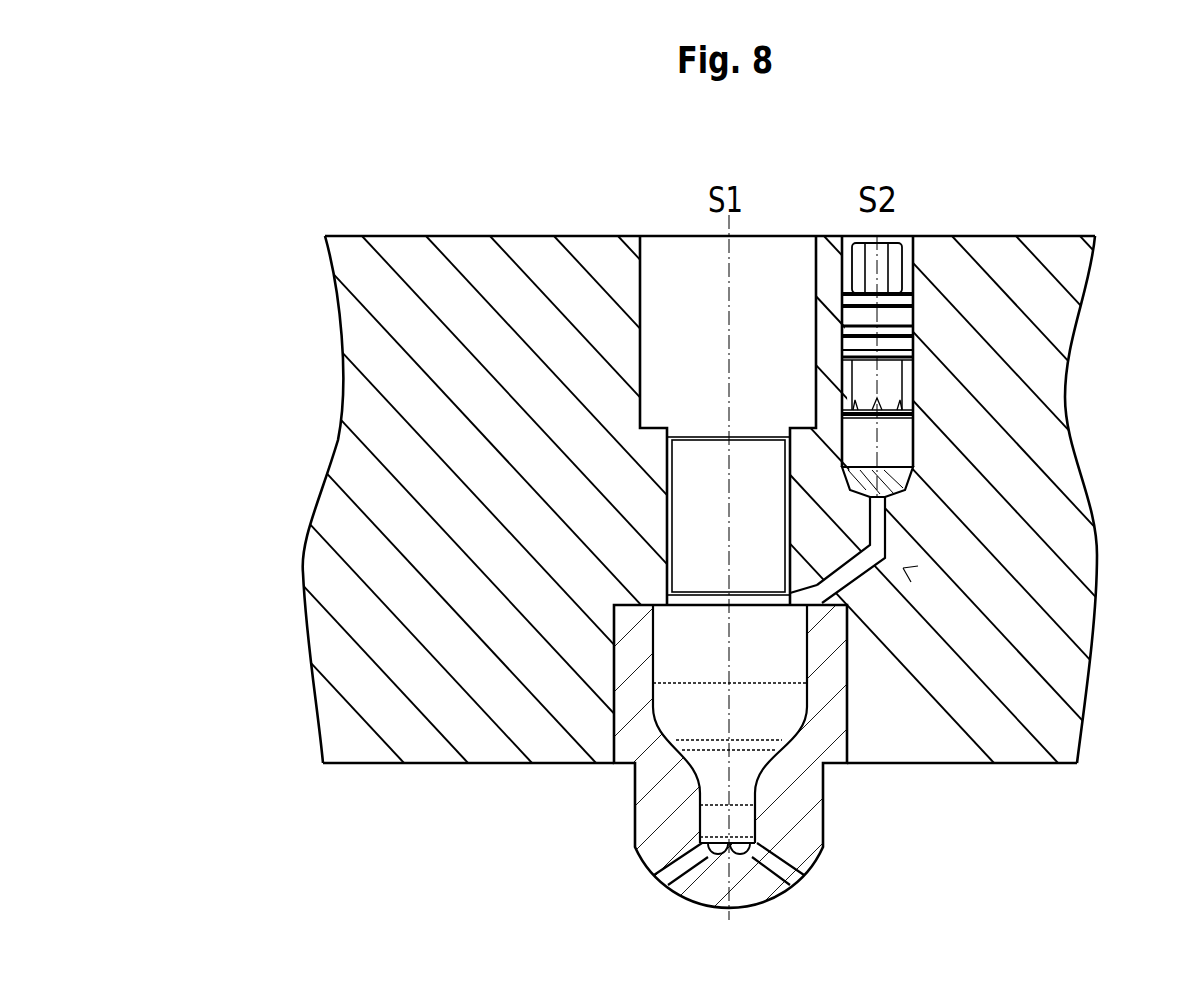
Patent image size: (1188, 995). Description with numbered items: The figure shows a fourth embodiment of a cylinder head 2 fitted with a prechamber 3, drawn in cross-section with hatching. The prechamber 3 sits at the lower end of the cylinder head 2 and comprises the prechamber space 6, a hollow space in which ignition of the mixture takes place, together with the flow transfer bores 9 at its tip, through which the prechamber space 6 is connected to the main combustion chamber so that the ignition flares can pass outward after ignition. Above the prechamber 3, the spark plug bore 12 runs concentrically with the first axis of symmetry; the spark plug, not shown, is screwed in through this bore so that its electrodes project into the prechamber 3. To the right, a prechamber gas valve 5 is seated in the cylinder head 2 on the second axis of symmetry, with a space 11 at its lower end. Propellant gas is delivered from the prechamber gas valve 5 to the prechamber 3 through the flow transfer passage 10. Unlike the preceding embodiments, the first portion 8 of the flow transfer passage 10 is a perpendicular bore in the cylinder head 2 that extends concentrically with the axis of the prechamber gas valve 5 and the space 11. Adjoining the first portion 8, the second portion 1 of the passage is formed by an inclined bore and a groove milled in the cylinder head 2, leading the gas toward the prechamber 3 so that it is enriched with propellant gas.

The second portion 1 is at (699, 615).
The cylinder head 2 is at (1022, 312).
The prechamber 3 is at (808, 792).
The prechamber gas valve 5 is at (898, 440).
The prechamber space 6 is at (700, 666).
The first portion 8 is at (890, 522).
The flow transfer bores 9 is at (787, 873).
The flow transfer passage 10 is at (903, 568).
The space 11 is at (905, 478).
The spark plug bore 12 is at (692, 521).